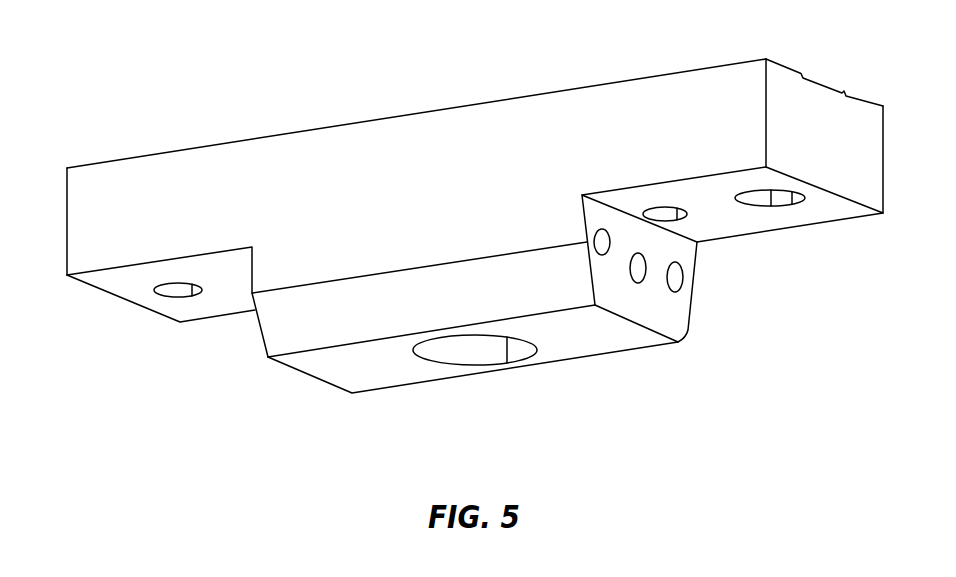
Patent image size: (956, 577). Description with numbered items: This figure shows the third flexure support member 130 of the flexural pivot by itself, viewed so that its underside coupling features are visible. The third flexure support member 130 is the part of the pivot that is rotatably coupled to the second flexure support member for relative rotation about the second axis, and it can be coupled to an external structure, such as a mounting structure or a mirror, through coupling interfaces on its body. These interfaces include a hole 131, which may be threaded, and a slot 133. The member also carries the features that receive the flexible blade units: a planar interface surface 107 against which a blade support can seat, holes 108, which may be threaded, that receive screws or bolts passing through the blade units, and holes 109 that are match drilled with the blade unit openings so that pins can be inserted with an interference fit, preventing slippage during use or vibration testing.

The third flexure support member 130 is at (394, 64).
The hole 131 is at (470, 358).
The interface surface 107 is at (670, 318).
The hole 108 is at (644, 294).
The hole 109 is at (602, 265).
The slot 133 is at (778, 213).